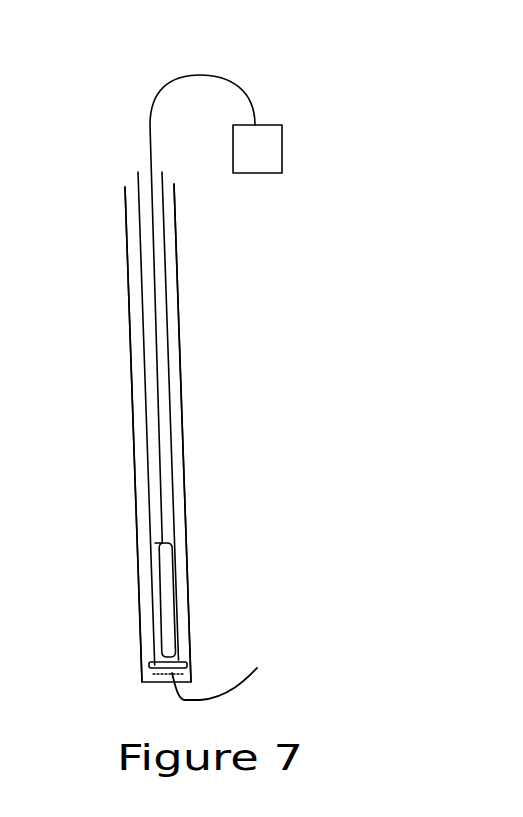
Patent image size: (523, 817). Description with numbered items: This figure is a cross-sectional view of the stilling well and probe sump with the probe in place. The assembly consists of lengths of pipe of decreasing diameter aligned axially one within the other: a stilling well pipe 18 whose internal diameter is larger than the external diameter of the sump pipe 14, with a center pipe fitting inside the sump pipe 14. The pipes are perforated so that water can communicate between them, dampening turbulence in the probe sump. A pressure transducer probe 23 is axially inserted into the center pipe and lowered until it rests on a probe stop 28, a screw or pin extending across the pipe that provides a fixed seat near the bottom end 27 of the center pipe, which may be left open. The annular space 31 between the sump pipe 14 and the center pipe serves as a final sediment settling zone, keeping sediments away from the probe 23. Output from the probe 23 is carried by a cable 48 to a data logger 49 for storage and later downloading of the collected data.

The sump pipe 14 is at (146, 455).
The stilling well pipe 18 is at (131, 394).
The pressure transducer probe 23 is at (168, 620).
The bottom end of central pipe 27 is at (233, 676).
The probe stop 28 is at (192, 657).
The annular space 31 is at (143, 608).
The cable 48 is at (213, 75).
The data logger 49 is at (260, 162).